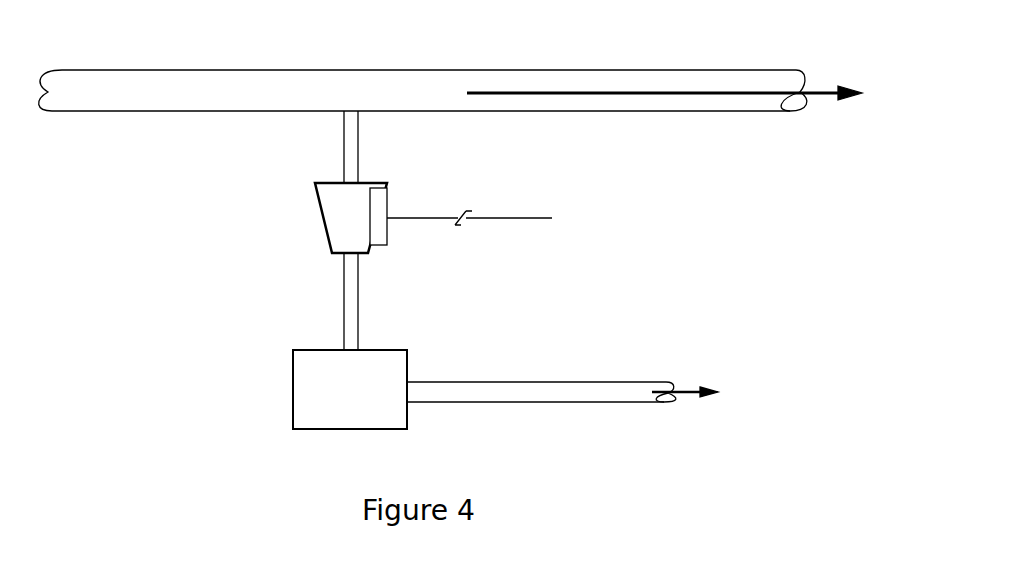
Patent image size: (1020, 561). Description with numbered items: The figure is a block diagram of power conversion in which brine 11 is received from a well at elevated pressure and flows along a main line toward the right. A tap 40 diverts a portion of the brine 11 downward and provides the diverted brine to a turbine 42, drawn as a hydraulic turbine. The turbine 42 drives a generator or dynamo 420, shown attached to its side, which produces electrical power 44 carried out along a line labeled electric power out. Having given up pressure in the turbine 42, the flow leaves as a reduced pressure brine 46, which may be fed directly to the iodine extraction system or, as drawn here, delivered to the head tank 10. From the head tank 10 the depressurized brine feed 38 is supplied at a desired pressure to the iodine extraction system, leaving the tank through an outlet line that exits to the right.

The brine 11 is at (181, 88).
The tap 40 is at (351, 154).
The turbine 42 is at (325, 195).
The generator or dynamo 420 is at (383, 201).
The electrical power 44 is at (500, 218).
The reduced pressure brine 46 is at (346, 310).
The head tank 10 is at (307, 366).
The cooled brine feed 38 is at (641, 388).